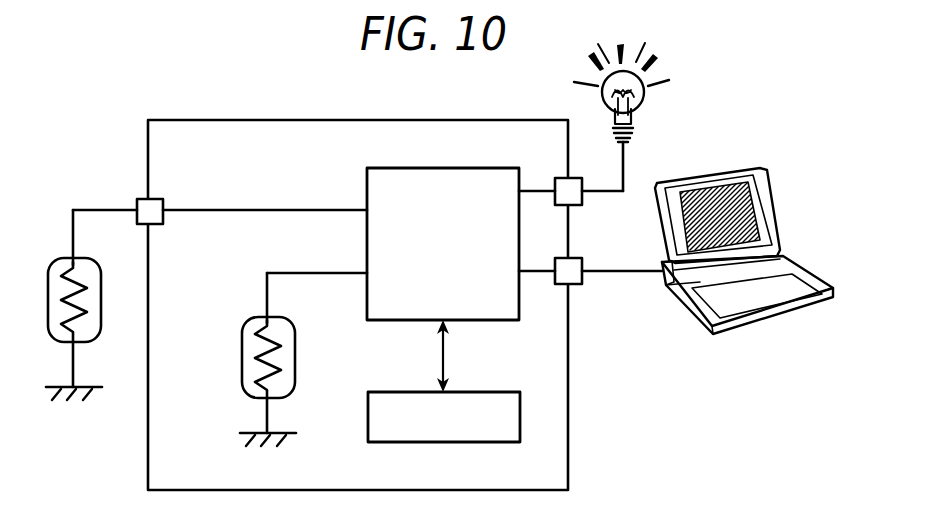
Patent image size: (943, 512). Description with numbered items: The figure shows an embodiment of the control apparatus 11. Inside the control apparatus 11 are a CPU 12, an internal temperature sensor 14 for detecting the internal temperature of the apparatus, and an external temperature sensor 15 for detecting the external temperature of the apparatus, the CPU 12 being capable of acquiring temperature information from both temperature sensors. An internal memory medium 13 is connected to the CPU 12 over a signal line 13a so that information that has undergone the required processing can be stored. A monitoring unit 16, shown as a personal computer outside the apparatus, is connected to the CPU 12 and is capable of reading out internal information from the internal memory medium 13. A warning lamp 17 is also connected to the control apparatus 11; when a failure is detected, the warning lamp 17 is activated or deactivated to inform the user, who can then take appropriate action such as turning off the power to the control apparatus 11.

The control apparatus 11 is at (292, 120).
The CPU 12 is at (428, 168).
The internal memory medium 13 is at (497, 392).
The signal line 13a is at (440, 356).
The internal temperature sensor 14 is at (255, 317).
The external temperature sensor 15 is at (55, 258).
The monitoring unit 16 is at (712, 174).
The warning lamp 17 is at (638, 52).